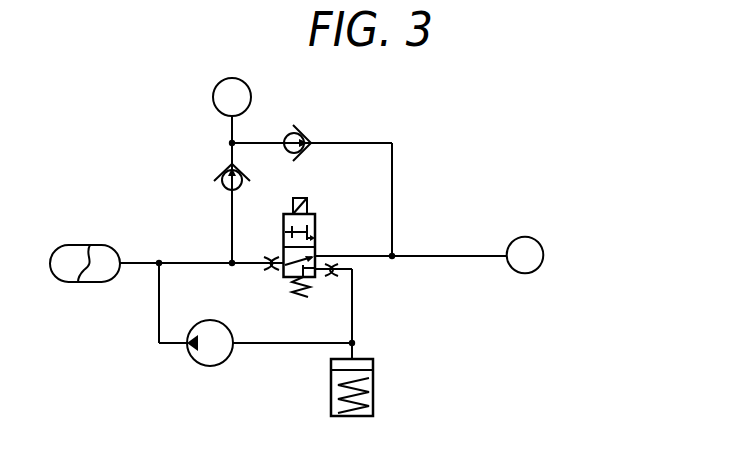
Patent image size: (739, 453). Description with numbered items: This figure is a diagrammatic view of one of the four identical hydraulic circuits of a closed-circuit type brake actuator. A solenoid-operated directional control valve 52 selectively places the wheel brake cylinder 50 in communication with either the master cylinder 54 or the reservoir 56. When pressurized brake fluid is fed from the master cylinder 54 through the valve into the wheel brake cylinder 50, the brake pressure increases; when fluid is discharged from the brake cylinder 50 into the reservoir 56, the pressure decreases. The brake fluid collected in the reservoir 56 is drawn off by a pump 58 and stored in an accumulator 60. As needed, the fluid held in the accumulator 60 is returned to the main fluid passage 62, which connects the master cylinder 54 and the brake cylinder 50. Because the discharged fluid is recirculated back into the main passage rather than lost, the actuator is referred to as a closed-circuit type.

The wheel brake cylinder 50 is at (518, 248).
The solenoid-operated directional control valve 52 is at (324, 229).
The master cylinder 54 is at (221, 84).
The reservoir 56 is at (373, 389).
The pump 58 is at (210, 360).
The accumulator 60 is at (78, 253).
The main fluid passage 62 is at (249, 265).